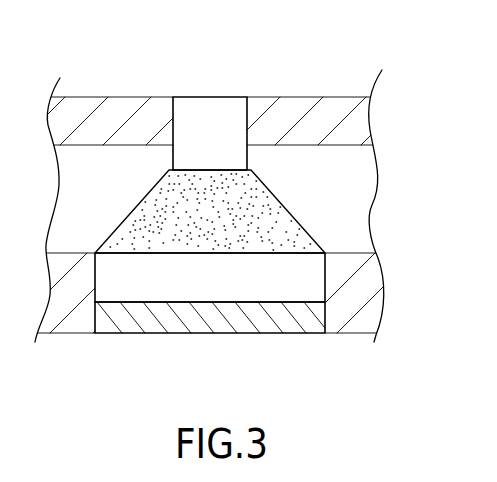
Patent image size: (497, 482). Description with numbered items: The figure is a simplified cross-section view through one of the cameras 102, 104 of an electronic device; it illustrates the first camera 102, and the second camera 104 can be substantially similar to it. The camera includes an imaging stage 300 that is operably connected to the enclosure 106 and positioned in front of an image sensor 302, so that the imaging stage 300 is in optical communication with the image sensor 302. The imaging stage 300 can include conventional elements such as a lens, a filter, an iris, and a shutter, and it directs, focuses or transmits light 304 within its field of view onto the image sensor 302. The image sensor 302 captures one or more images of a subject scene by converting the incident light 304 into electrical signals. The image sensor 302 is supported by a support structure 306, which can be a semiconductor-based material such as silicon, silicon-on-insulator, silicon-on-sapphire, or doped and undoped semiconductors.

The first camera 102 is at (232, 204).
The second camera 104 is at (232, 204).
The enclosure 106 is at (360, 118).
The imaging stage 300 is at (203, 112).
The image sensor 302 is at (310, 292).
The light 304 is at (300, 222).
The support structure 306 is at (123, 333).